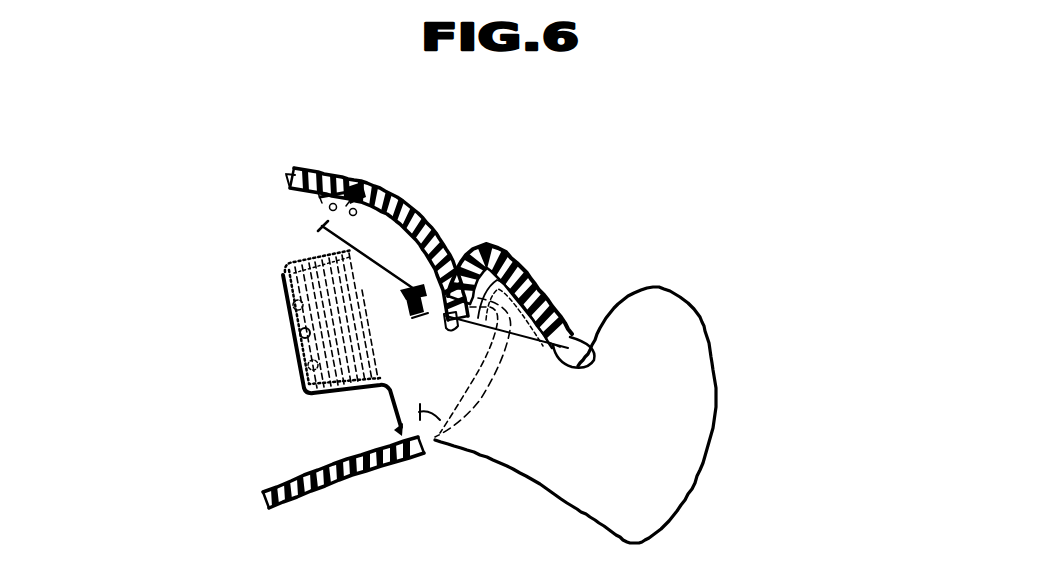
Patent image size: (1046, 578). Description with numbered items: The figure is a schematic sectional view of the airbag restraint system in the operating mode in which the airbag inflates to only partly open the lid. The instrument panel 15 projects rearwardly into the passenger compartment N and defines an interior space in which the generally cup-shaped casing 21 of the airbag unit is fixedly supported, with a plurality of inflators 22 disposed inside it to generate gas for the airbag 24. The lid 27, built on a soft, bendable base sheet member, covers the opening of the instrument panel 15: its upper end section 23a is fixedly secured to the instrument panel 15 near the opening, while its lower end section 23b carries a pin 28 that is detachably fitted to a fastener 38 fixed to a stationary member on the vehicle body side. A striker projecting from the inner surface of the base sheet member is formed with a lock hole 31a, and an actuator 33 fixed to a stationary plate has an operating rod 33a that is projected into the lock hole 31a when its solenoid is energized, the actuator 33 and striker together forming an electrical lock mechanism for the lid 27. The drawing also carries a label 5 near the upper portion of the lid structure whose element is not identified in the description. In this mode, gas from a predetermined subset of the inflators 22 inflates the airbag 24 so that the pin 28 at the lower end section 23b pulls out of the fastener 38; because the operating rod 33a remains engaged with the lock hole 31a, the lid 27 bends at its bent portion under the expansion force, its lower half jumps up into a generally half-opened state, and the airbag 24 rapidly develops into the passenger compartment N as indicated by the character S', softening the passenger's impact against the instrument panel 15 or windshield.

The shell 5 is at (290, 188).
The lid 27 is at (395, 197).
The upper end section 23a is at (358, 188).
The lower end section 23b is at (457, 278).
The lock hole 31a is at (450, 278).
The pin 28 is at (600, 326).
The airbag 24 is at (695, 308).
The passenger compartment N is at (838, 279).
The character indicating airbag development S' is at (751, 430).
The casing 21 is at (293, 263).
The inflators 22 is at (292, 307).
The operating rod 33a is at (402, 297).
The actuator 33 is at (447, 334).
The fastener 38 is at (440, 440).
The instrument panel 15 is at (272, 483).